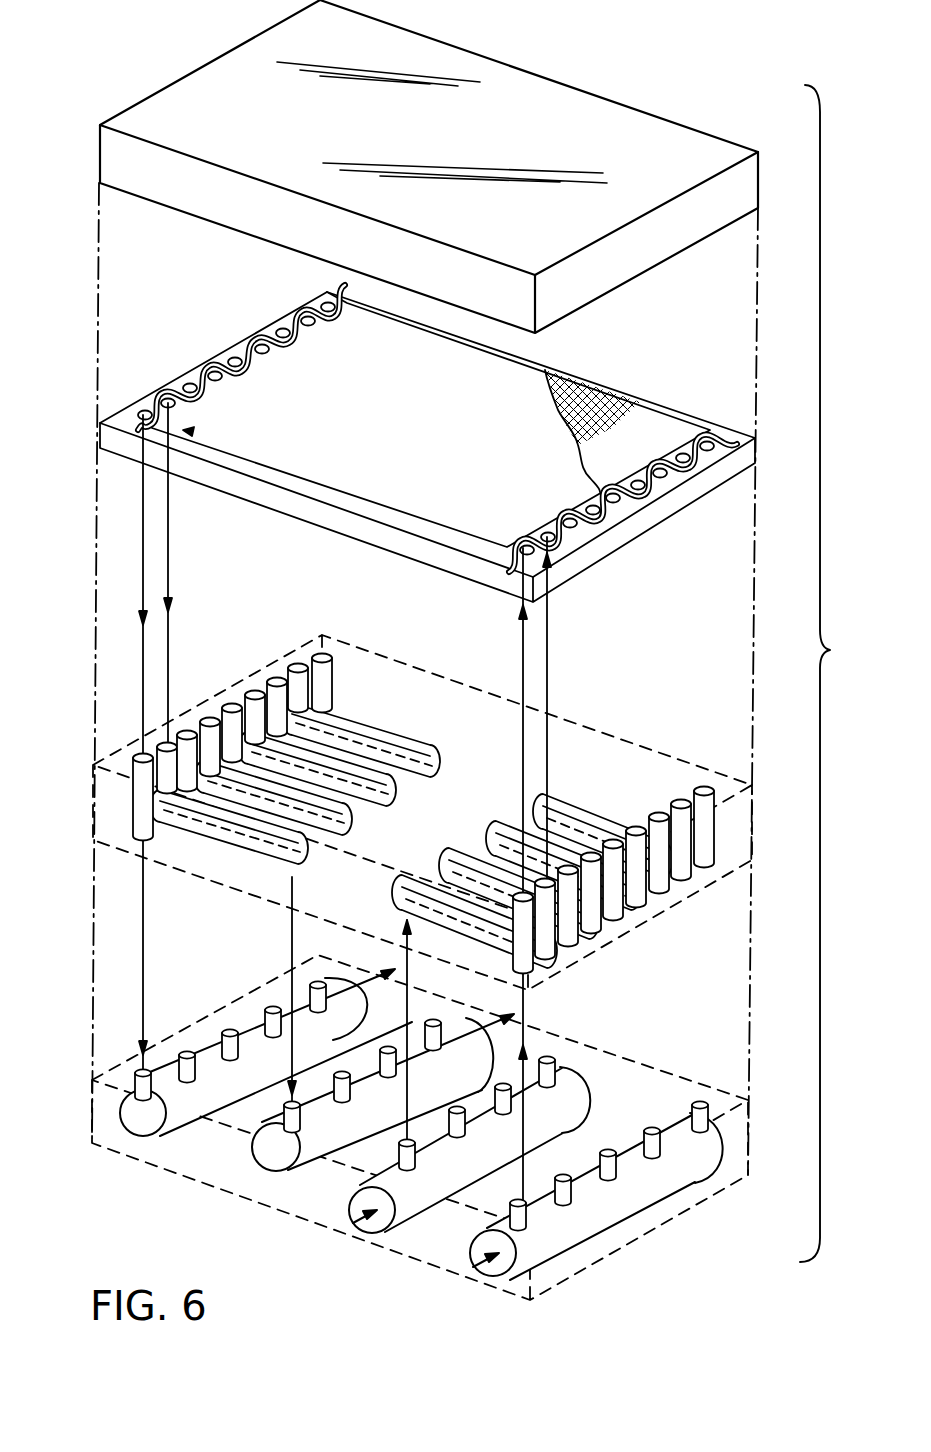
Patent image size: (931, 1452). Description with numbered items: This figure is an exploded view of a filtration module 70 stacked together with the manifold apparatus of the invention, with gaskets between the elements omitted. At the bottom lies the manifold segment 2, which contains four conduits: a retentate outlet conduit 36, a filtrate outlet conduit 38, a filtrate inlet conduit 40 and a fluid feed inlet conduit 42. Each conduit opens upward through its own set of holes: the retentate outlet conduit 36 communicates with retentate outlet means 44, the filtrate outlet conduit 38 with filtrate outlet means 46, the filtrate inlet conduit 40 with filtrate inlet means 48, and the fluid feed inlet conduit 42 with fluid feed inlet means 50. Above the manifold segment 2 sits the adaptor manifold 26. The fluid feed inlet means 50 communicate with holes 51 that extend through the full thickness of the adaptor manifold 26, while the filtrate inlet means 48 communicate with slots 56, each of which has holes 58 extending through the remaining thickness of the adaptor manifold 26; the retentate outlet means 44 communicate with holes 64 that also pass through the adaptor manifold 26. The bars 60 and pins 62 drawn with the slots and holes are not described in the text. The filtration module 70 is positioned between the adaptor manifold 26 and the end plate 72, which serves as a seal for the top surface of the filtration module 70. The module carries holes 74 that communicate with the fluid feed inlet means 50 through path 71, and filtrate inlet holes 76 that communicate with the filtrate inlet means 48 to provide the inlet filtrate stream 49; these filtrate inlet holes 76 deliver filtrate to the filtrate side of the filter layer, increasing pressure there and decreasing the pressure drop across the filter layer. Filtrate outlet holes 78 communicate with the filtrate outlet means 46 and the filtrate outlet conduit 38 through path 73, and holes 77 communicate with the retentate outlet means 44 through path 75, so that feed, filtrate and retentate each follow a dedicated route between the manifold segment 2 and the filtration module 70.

The manifold segment 2 is at (760, 1120).
The adaptor manifold 26 is at (757, 806).
The retentate outlet conduit 36 is at (170, 1133).
The filtrate outlet conduit 38 is at (300, 1178).
The filtrate inlet conduit 40 is at (402, 1233).
The fluid feed inlet conduit 42 is at (478, 1280).
The retentate outlet means 44 is at (316, 983).
The filtrate outlet means 46 is at (431, 1021).
The filtrate inlet means 48 is at (546, 1084).
The inlet filtrate stream 49 is at (550, 660).
The fluid feed inlet means 50 is at (613, 1175).
The holes 51 is at (675, 905).
The slots 56 is at (532, 859).
The holes 58 is at (672, 798).
The channel bars 60 is at (436, 746).
The pins 62 is at (298, 664).
The holes 64 is at (228, 706).
The filtration module 70 is at (452, 438).
The path 71 is at (521, 660).
The end plate 72 is at (633, 110).
The path 73 is at (170, 553).
The holes 74 is at (707, 451).
The path 75 is at (145, 543).
The filtrate inlet holes 76 is at (683, 455).
The holes 77 is at (328, 304).
The filtrate outlet holes 78 is at (266, 352).